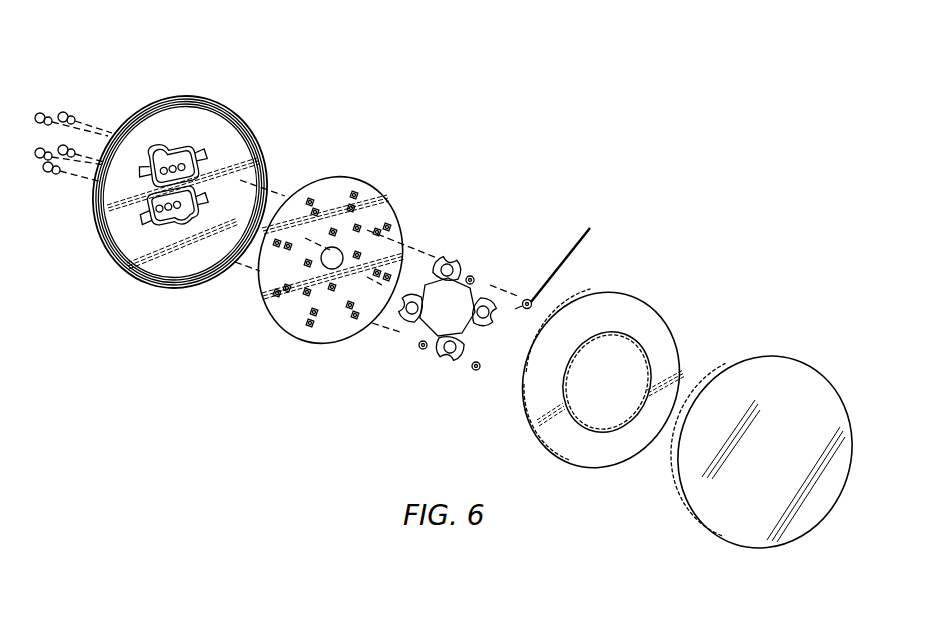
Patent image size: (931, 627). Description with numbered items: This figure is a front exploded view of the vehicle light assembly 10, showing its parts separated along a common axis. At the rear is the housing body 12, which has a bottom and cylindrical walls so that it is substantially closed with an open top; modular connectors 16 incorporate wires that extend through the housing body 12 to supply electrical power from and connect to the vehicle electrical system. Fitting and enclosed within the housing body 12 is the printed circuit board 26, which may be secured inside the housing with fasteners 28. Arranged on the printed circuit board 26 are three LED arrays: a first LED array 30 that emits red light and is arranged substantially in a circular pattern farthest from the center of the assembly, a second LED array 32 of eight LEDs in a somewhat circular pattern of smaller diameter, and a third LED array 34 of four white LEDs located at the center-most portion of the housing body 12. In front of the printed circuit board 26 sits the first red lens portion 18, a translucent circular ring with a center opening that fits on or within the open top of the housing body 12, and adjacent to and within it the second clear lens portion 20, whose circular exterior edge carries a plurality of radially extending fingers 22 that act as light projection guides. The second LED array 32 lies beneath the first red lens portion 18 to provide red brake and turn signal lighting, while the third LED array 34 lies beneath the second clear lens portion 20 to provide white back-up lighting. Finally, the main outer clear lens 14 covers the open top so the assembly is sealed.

The light assembly 10 is at (578, 129).
The housing body 12 is at (127, 132).
The main outer clear lens 14 is at (793, 385).
The modular connectors 16 is at (167, 147).
The first red lens portion 18 is at (647, 322).
The second clear lens portion 20 is at (497, 290).
The radially extending fingers 22 is at (468, 268).
The printed circuit board 26 is at (385, 213).
The fasteners 28 is at (570, 255).
The first LED array 30 is at (358, 195).
The second LED array 32 is at (317, 314).
The third LED array 34 is at (333, 291).